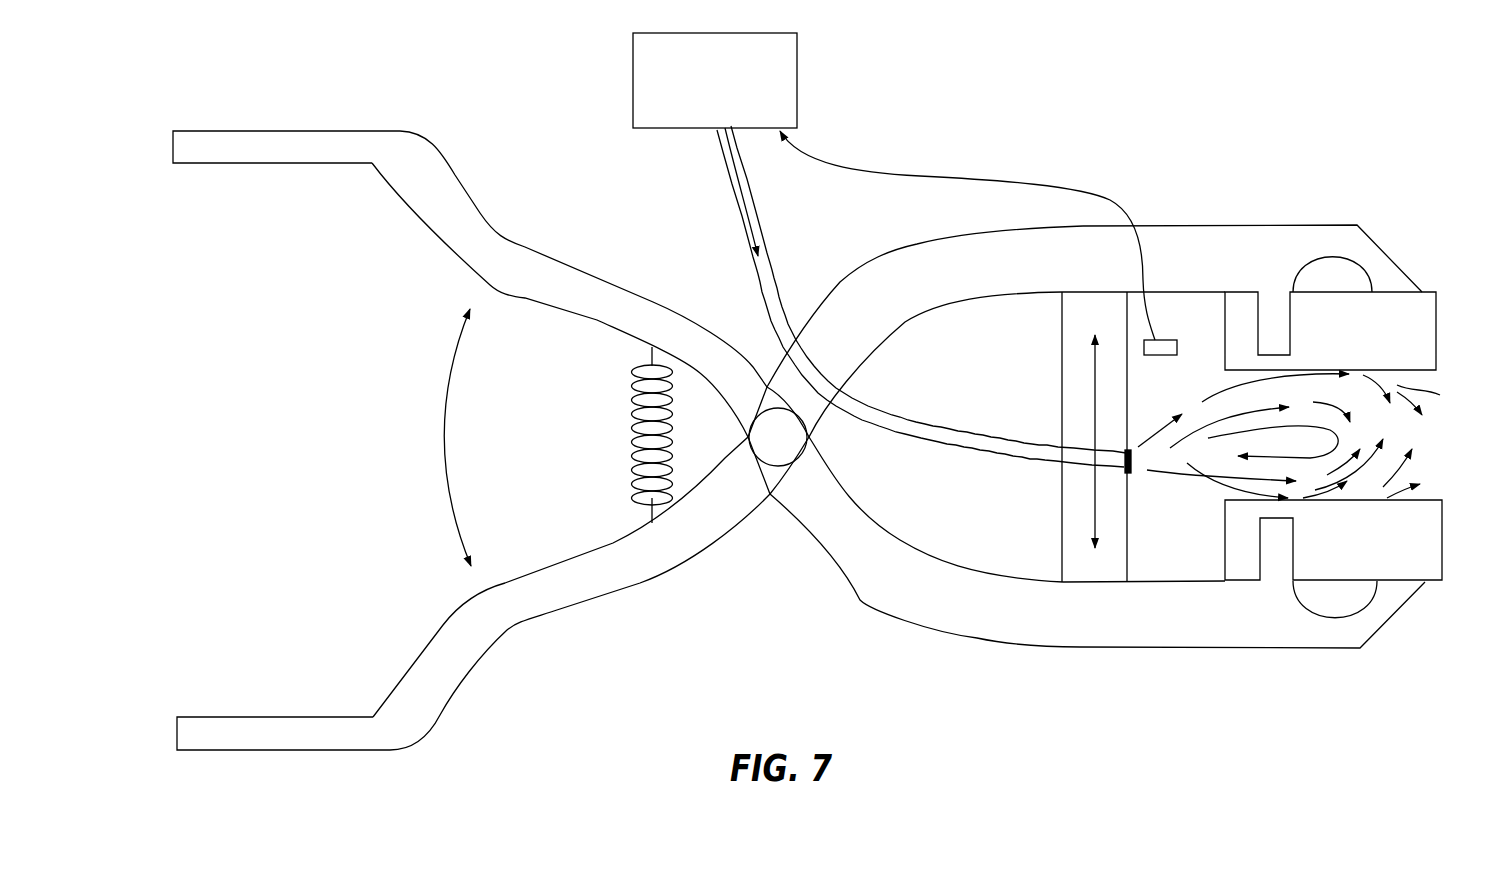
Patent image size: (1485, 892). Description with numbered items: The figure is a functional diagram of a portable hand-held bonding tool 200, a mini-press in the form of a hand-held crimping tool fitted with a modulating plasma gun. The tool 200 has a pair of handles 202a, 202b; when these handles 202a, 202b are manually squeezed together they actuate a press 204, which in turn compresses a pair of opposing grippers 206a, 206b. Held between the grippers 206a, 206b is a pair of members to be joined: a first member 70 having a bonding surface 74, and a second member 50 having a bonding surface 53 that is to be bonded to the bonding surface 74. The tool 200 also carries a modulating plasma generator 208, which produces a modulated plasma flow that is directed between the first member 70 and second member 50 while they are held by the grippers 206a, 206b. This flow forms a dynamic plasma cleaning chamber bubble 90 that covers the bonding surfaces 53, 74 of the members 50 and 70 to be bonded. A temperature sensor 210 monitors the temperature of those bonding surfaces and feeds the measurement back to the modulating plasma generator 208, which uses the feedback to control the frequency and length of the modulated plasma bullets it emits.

The tool 200 is at (206, 61).
The handle 202a is at (257, 130).
The handle 202b is at (208, 720).
The press 204 is at (1113, 331).
The gripper 206a is at (1323, 630).
The gripper 206b is at (1318, 237).
The modulating plasma generator 208 is at (697, 118).
The temperature sensor 210 is at (1162, 340).
The second member 50 is at (1329, 356).
The first member 70 is at (1328, 537).
The dynamic plasma cleaning chamber bubble 90 is at (1228, 387).
The bonding surface 53 is at (1387, 370).
The bonding surface 74 is at (1437, 500).